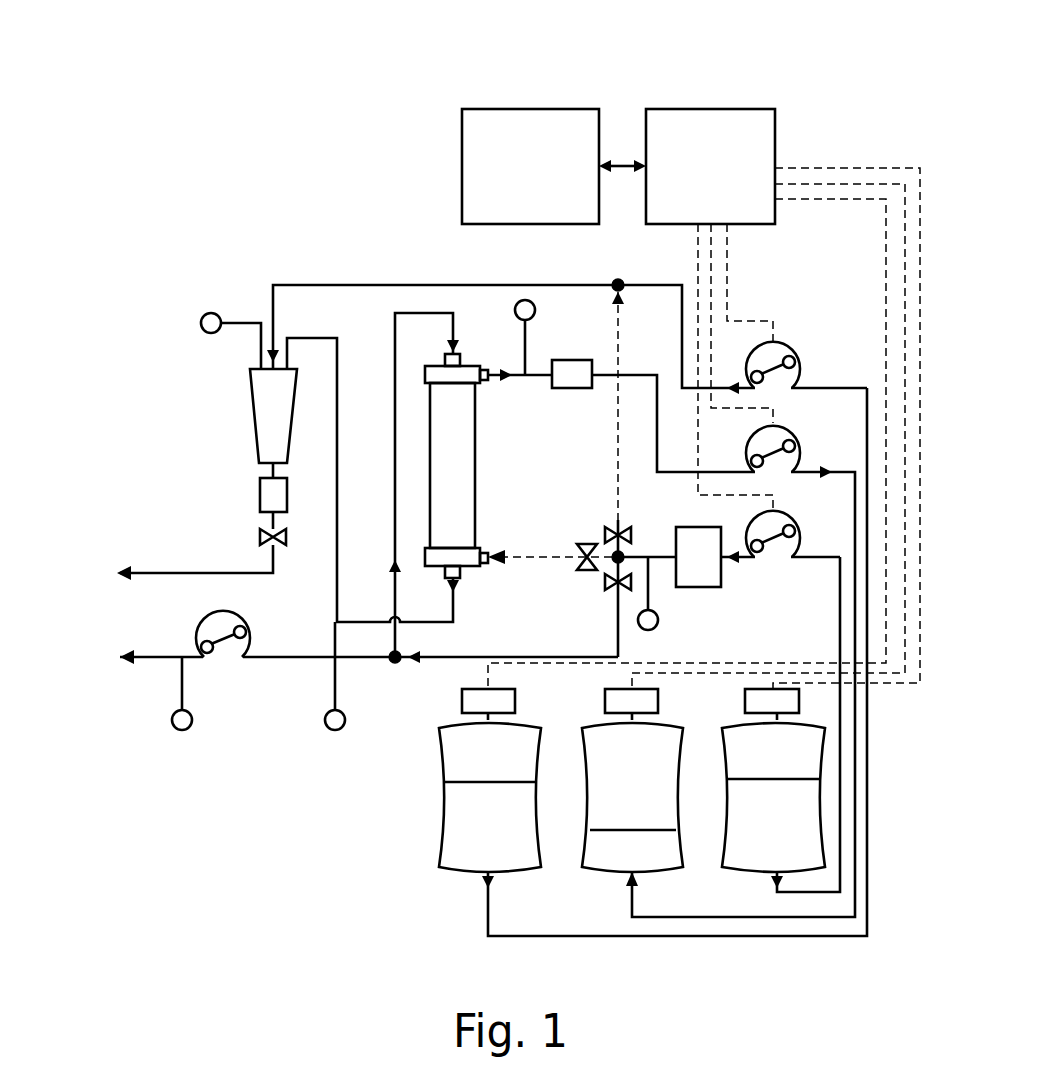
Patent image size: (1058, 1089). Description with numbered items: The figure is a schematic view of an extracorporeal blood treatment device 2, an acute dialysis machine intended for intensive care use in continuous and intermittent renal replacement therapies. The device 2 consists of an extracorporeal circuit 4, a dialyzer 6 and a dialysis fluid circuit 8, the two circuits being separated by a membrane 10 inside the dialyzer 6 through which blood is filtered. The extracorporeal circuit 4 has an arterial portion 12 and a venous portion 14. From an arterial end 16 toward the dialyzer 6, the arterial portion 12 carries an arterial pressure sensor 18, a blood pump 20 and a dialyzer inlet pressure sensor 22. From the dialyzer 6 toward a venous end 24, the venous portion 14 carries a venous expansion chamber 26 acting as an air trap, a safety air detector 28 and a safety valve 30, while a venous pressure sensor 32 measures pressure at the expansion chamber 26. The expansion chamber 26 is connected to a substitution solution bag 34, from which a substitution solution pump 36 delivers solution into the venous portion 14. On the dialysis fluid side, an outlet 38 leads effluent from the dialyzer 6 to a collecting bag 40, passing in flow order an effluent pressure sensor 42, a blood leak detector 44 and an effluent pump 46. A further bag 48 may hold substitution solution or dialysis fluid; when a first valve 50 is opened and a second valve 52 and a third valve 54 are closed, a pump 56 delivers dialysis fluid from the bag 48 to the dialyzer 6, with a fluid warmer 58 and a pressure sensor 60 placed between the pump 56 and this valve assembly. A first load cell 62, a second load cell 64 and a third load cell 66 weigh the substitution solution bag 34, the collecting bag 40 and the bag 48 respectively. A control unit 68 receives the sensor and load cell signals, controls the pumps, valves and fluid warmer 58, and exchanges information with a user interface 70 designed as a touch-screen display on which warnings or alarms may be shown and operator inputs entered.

The extracorporeal blood treatment device 2 is at (209, 190).
The extracorporeal circuit 4 is at (168, 540).
The dialyzer 6 is at (414, 488).
The dialysis fluid circuit 8 is at (837, 462).
The membrane 10 is at (457, 477).
The arterial portion 12 is at (120, 685).
The venous portion 14 is at (140, 560).
The arterial end 16 is at (118, 662).
The arterial pressure sensor 18 is at (192, 722).
The blood pump 20 is at (205, 632).
The dialyzer inlet pressure sensor 22 is at (345, 722).
The venous end 24 is at (117, 576).
The venous expansion chamber 26 is at (256, 400).
The safety air detector 28 is at (258, 490).
The safety valve 30 is at (258, 537).
The venous pressure sensor 32 is at (200, 327).
The substitution solution bag 34 is at (442, 868).
The substitution solution pump 36 is at (787, 345).
The outlet 38 is at (635, 368).
The collecting bag 40 is at (585, 868).
The effluent pressure sensor 42 is at (535, 312).
The blood leak detector 44 is at (572, 388).
The effluent pump 46 is at (787, 436).
The bag 48 is at (729, 868).
The first valve 50 is at (585, 570).
The second valve 52 is at (612, 527).
The third valve 54 is at (610, 590).
The pump 56 is at (787, 522).
The fluid warmer 58 is at (695, 527).
The pressure sensor 60 is at (658, 622).
The first load cell 62 is at (462, 700).
The second load cell 64 is at (605, 700).
The third load cell 66 is at (745, 700).
The control unit 68 is at (711, 109).
The user interface 70 is at (522, 109).